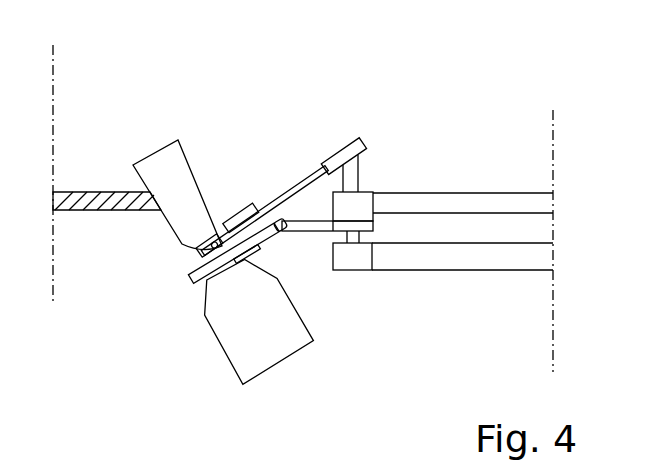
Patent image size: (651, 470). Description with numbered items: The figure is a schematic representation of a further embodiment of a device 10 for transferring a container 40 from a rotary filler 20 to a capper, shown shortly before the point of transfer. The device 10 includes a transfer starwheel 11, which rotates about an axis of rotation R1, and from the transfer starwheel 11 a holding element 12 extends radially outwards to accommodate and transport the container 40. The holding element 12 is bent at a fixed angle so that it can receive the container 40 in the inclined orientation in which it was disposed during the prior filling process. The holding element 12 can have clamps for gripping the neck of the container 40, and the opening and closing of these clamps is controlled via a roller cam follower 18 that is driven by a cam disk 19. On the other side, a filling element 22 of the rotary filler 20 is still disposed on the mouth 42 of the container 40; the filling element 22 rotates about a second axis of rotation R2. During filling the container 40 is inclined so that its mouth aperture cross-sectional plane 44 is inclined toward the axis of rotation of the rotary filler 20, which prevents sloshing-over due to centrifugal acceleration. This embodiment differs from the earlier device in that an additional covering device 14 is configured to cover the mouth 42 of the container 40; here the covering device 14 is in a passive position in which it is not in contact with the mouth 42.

The device 10 is at (416, 90).
The transfer starwheel 11 is at (446, 198).
The holding element 12 is at (295, 226).
The covering device 14 is at (248, 218).
The roller cam follower 18 is at (356, 258).
The cam disk 19 is at (463, 270).
The rotary filler 20 is at (131, 80).
The filling element 22 is at (182, 185).
The container 40 is at (228, 335).
The mouth 42 is at (197, 258).
The mouth aperture cross-sectional plane 44 is at (220, 240).
The axis of rotation R1 is at (554, 225).
The axis of rotation R2 is at (54, 160).